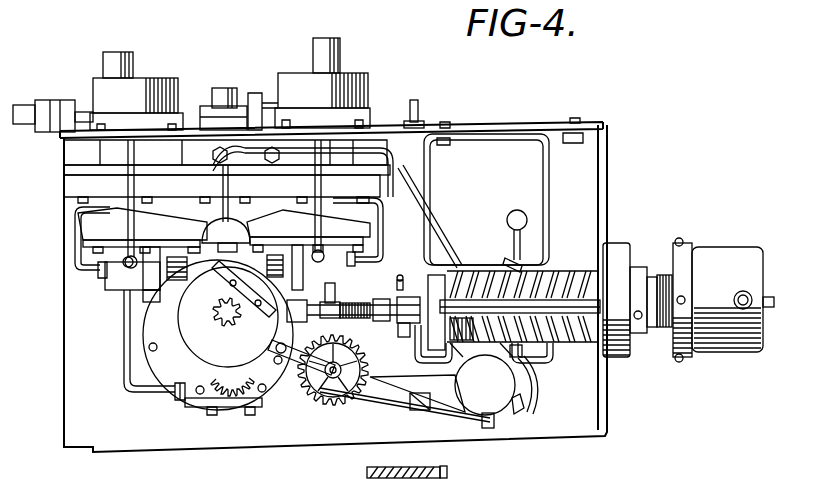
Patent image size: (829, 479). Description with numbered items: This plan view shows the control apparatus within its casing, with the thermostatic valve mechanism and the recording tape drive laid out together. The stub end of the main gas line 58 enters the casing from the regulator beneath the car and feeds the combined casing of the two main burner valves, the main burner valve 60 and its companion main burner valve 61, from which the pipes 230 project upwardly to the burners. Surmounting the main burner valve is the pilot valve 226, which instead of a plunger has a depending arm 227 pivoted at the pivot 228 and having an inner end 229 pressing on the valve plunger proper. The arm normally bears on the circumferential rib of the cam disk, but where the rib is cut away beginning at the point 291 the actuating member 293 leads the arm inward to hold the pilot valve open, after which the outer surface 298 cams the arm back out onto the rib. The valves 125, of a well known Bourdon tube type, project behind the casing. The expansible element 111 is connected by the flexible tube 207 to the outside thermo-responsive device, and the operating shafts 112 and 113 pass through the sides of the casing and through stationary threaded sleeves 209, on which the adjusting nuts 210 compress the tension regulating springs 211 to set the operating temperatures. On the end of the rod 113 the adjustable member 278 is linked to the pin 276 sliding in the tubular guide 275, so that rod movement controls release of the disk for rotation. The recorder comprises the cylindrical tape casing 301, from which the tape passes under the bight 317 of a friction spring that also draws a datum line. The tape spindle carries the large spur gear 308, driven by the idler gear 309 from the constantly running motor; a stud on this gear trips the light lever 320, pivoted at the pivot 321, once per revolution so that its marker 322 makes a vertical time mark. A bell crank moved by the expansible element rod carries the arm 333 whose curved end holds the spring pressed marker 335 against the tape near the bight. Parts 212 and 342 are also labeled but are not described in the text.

The main gas line 58 is at (230, 89).
The main burner valve 60 is at (100, 226).
The right heater block 61 is at (357, 226).
The expansible element 111 is at (717, 254).
The operating shaft 112 is at (398, 264).
The operating shaft 113 is at (357, 312).
The valve 125 is at (170, 77).
The flexible tube 207 is at (748, 292).
The stationary threaded sleeve 209 is at (582, 345).
The adjusting nut 210 is at (458, 263).
The tension regulating spring 211 is at (560, 265).
The bearing support 212 is at (385, 320).
The pilot valve 226 is at (120, 274).
The depending arm 227 is at (175, 314).
The pivot 228 is at (228, 317).
The inner end 229 is at (175, 258).
The pipe 230 is at (131, 58).
The tubular guide 275 is at (313, 320).
The pin 276 is at (330, 285).
The adjustable member 278 is at (322, 302).
The point 291 is at (244, 289).
The actuating member 293 is at (228, 326).
The outer surface 298 is at (180, 292).
The cylindrical tape casing 301 is at (498, 412).
The large spur gear 308 is at (316, 402).
The idler gear 309 is at (365, 320).
The bight 317 is at (533, 392).
The light lever 320 is at (367, 376).
The pivot 321 is at (427, 412).
The marker 322 is at (482, 418).
The arm 333 is at (531, 365).
The spring pressed marker 335 is at (512, 414).
The gear 342 is at (230, 397).